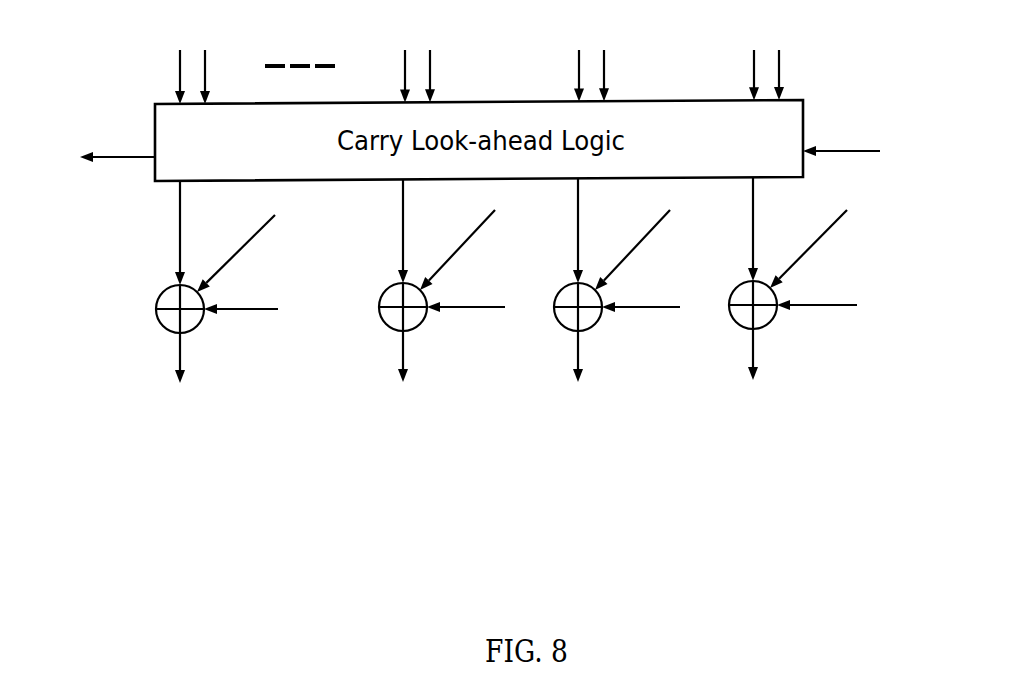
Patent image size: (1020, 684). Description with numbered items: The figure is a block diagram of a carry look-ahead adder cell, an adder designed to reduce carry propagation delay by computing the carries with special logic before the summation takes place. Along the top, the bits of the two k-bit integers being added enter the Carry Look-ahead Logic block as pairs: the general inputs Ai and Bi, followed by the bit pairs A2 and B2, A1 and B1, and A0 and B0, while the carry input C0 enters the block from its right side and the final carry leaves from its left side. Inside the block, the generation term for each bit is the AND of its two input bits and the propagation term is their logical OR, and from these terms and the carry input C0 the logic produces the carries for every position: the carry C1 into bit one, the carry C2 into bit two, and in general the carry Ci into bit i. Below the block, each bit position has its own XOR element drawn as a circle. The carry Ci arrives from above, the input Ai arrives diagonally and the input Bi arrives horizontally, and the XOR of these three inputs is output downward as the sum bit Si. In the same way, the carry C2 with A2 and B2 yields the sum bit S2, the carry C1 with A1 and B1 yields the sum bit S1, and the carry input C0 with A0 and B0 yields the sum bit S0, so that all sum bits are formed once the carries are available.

The carry input C0 is at (812, 196).
The input bit Ai of integer A Ai is at (229, 154).
The input bit Bi of integer B Bi is at (255, 168).
The input bit A2 of integer A A2 is at (451, 152).
The input bit B2 of integer B B2 is at (480, 166).
The input bit A1 of integer A A1 is at (629, 151).
The input bit B1 of integer B B1 is at (658, 166).
The input bit A0 of integer A A0 is at (804, 149).
The input bit B0 of integer B B0 is at (834, 165).
The carry input to bit i Ci is at (160, 233).
The carry into bit two C2 is at (381, 232).
The carry into bit one C1 is at (556, 230).
The sum bit Si is at (186, 340).
The sum bit S2 is at (411, 339).
The sum bit S1 is at (586, 339).
The sum bit S0 is at (761, 338).